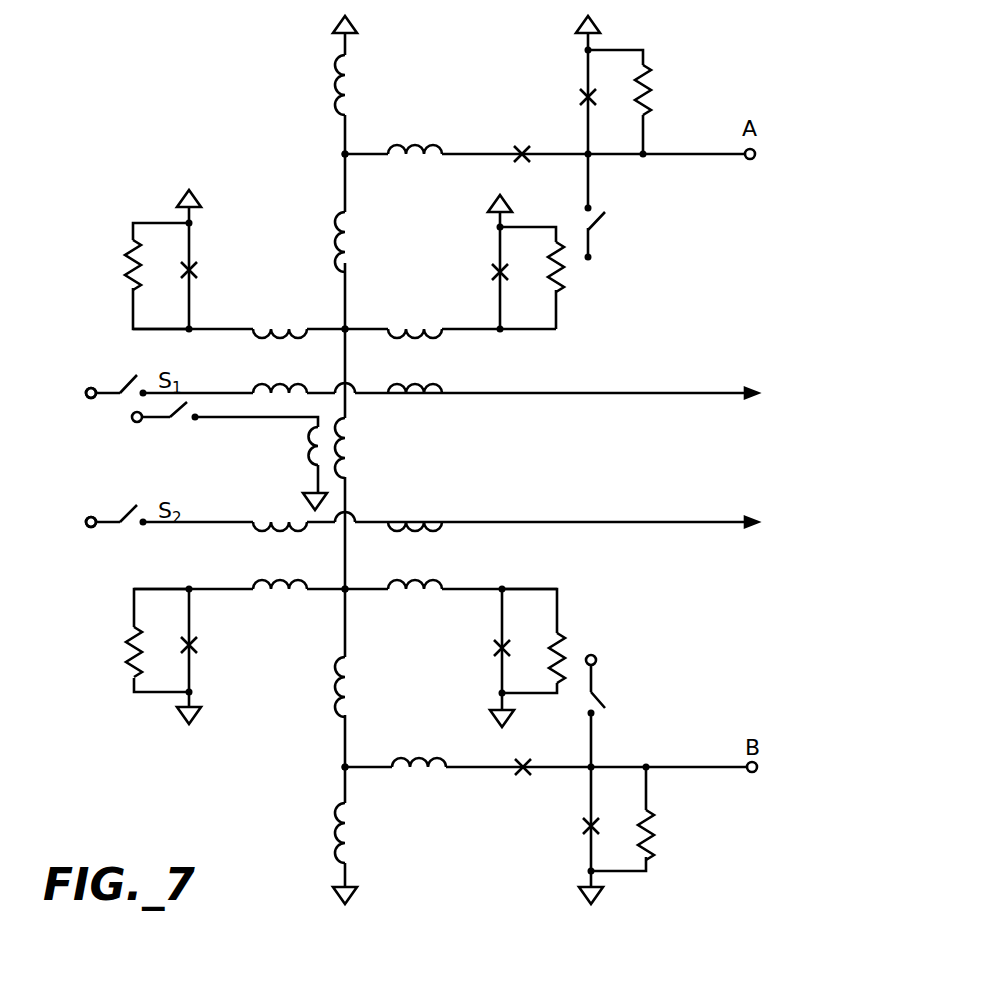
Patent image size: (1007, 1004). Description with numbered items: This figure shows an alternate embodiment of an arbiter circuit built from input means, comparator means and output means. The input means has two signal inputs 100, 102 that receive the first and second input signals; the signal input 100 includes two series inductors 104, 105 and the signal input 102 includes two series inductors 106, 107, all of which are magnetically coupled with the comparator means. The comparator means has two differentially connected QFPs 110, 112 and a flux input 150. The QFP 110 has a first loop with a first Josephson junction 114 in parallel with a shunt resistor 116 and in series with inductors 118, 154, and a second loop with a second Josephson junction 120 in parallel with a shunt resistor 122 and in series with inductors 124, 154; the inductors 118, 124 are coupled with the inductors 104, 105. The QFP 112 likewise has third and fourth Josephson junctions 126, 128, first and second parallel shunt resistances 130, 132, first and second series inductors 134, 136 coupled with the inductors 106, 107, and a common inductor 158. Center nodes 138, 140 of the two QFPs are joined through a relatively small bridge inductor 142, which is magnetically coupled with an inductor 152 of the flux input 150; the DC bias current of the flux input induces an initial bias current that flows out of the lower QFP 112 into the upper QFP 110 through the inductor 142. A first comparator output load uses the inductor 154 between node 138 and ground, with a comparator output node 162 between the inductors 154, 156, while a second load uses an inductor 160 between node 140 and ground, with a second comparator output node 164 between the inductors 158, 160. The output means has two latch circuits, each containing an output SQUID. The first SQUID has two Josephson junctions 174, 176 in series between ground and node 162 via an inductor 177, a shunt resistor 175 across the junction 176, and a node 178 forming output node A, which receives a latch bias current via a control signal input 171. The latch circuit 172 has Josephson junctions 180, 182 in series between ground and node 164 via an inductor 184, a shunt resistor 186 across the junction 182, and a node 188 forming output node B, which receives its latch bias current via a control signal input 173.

The signal input 100 is at (88, 387).
The signal input 102 is at (91, 527).
The series inductor 104 is at (258, 385).
The series inductor 105 is at (421, 385).
The series inductor 106 is at (270, 520).
The series inductor 107 is at (397, 528).
The QFP 110 is at (358, 307).
The QFP 112 is at (332, 600).
The first Josephson junction 114 is at (197, 265).
The shunt resistor 116 is at (130, 243).
The inductor 118 is at (271, 333).
The second Josephson junction 120 is at (494, 266).
The shunt resistor 122 is at (566, 286).
The inductor 124 is at (397, 333).
The third Josephson junction 126 is at (197, 642).
The fourth Josephson junction 128 is at (494, 644).
The first parallel shunt resistance 130 is at (126, 645).
The second parallel shunt resistance 132 is at (566, 648).
The first series inductor 134 is at (272, 580).
The second series inductor 136 is at (424, 583).
The center node 138 is at (348, 334).
The center node 140 is at (352, 585).
The bridge inductor 142 is at (349, 456).
The flux input 150 is at (232, 422).
The inductor 152 is at (310, 458).
The inductor 154 is at (333, 230).
The inductor 156 is at (340, 82).
The common inductor 158 is at (349, 670).
The inductor 160 is at (335, 820).
The comparator output node 162 is at (343, 153).
The second comparator output node 164 is at (343, 765).
The control signal input 171 is at (592, 242).
The latch circuit 172 is at (525, 810).
The control signal input 173 is at (596, 755).
The Josephson junction 174 is at (518, 153).
The shunt resistor 175 is at (648, 77).
The Josephson junction 176 is at (580, 92).
The inductor 177 is at (411, 148).
The node 178 is at (647, 152).
The Josephson junction 180 is at (524, 758).
The Josephson junction 182 is at (585, 836).
The inductor 184 is at (416, 757).
The shunt resistor 186 is at (655, 826).
The node 188 is at (650, 765).